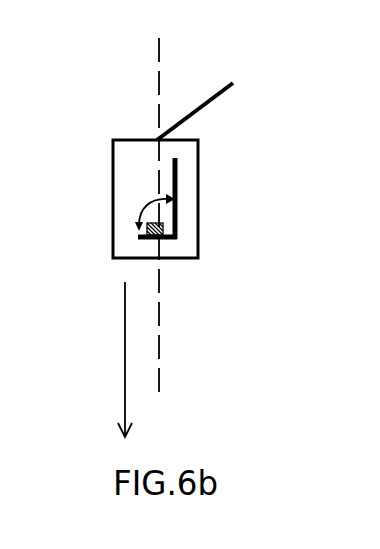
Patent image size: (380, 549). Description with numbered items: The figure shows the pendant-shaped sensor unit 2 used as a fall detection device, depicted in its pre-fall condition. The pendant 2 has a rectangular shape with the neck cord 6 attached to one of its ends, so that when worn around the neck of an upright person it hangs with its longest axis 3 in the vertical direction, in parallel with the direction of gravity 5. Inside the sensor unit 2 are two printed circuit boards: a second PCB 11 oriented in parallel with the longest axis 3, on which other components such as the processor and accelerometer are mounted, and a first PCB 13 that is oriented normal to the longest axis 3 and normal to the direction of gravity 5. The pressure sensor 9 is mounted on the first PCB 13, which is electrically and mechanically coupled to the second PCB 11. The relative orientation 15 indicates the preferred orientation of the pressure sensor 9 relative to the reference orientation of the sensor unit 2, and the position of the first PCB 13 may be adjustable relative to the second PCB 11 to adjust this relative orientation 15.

The sensor unit 2 is at (113, 170).
The longest axis 3 is at (162, 377).
The direction of gravity 5 is at (124, 384).
The neck cord 6 is at (212, 102).
The pressure sensor 9 is at (157, 234).
The second PCB 11 is at (178, 185).
The first PCB 13 is at (137, 232).
The relative orientation 15 is at (155, 206).